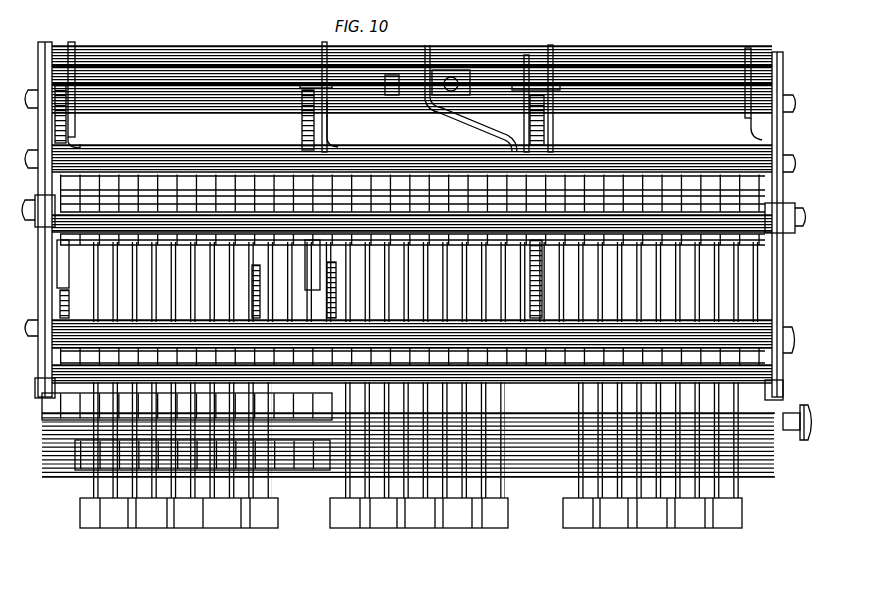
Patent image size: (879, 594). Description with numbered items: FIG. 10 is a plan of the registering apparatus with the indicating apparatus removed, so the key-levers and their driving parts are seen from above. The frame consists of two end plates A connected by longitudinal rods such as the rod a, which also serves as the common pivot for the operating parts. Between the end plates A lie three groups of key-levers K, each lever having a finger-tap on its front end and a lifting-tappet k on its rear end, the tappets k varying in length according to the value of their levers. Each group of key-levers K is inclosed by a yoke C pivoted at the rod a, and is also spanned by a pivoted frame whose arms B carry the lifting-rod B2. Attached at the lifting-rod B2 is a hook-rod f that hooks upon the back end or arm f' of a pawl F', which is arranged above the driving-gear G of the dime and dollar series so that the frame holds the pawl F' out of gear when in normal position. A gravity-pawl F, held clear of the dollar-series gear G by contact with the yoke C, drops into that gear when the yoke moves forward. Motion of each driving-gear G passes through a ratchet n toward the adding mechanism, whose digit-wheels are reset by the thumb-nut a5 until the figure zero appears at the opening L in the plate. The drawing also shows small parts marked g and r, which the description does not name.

The end plate A is at (47, 272).
The lifting-rod B2 is at (172, 82).
The frame arm B is at (74, 126).
The hook-rod f is at (440, 93).
The arm of pawl F' f' is at (428, 86).
The pawl F' is at (412, 208).
The lifting-tappet k is at (412, 194).
The rod a is at (786, 229).
The yoke C is at (72, 252).
The gravity-pawl F is at (45, 304).
The driving-gear G is at (66, 305).
The rack g is at (297, 286).
The ratchet n is at (254, 305).
The lower bar r is at (528, 468).
The key-lever K is at (262, 532).
The opening L is at (272, 472).
The thumb-nut a5 is at (800, 410).